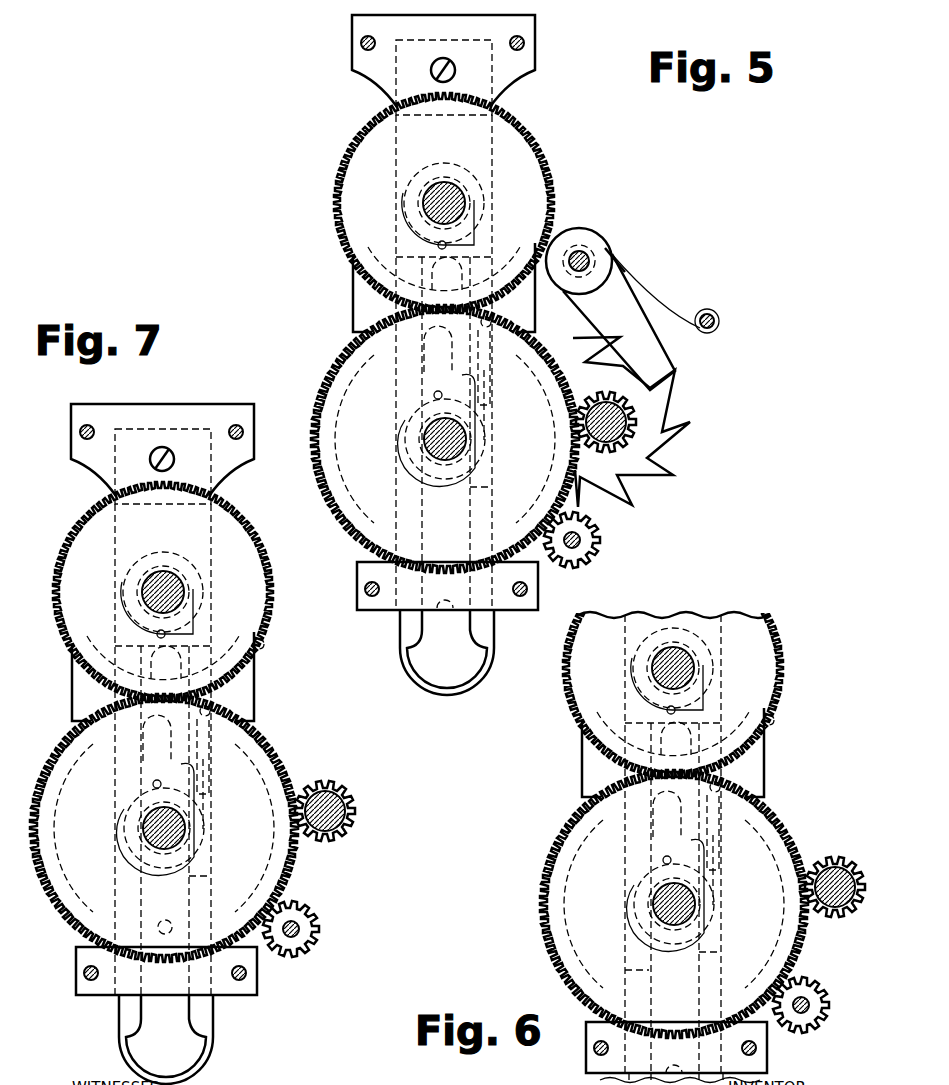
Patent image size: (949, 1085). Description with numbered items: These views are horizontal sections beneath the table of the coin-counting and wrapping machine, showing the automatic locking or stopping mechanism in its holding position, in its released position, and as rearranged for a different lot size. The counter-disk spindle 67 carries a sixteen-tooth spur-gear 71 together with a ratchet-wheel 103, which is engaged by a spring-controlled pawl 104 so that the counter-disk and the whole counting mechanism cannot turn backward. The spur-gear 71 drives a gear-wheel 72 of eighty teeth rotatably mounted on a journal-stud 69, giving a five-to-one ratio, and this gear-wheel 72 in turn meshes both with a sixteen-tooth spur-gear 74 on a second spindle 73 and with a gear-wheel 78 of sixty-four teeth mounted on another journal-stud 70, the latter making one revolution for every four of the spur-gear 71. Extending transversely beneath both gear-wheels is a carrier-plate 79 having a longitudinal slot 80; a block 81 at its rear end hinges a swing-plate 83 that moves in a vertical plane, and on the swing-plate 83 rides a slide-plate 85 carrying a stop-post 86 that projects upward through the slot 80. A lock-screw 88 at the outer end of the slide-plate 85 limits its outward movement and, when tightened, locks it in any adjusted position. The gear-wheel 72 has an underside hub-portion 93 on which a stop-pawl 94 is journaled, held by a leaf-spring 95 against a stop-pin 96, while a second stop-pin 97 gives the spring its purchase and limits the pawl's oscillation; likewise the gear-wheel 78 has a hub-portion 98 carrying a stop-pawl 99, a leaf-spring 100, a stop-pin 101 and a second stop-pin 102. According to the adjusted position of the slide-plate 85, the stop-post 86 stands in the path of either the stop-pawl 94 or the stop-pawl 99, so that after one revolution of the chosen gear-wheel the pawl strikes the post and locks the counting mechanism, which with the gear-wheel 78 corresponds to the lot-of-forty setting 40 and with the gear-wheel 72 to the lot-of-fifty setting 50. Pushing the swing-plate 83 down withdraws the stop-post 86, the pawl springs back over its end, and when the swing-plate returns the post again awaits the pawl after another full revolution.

In FIG. 7, the loop 40 is at (166, 1039).
In FIG. 5, the loop 50 is at (447, 652).
In FIG. 5, the spindle 67 is at (640, 418).
In FIG. 7, the spindle 67 is at (351, 810).
In FIG. 6, the spindle 67 is at (835, 867).
In FIG. 5, the journal-stud 69 is at (445, 450).
In FIG. 7, the journal-stud 69 is at (132, 828).
In FIG. 6, the journal-stud 69 is at (644, 904).
In FIG. 5, the journal-stud 70 is at (444, 190).
In FIG. 7, the journal-stud 70 is at (163, 571).
In FIG. 6, the journal-stud 70 is at (673, 638).
In FIG. 5, the spur-gear 71 is at (627, 424).
In FIG. 7, the spur-gear 71 is at (325, 790).
In FIG. 6, the spur-gear 71 is at (832, 871).
In FIG. 5, the gear-wheel 72 is at (532, 340).
In FIG. 7, the gear-wheel 72 is at (186, 828).
In FIG. 6, the gear-wheel 72 is at (665, 904).
In FIG. 5, the spindle 73 is at (575, 540).
In FIG. 7, the spindle 73 is at (322, 915).
In FIG. 6, the spindle 73 is at (827, 985).
In FIG. 5, the spur-gear 74 is at (600, 550).
In FIG. 7, the spur-gear 74 is at (311, 929).
In FIG. 6, the spur-gear 74 is at (812, 1014).
In FIG. 5, the gear-wheel 78 is at (545, 168).
In FIG. 7, the gear-wheel 78 is at (179, 592).
In FIG. 6, the gear-wheel 78 is at (675, 668).
In FIG. 5, the carrier-plate 79 is at (520, 67).
In FIG. 7, the carrier-plate 79 is at (148, 684).
In FIG. 6, the carrier-plate 79 is at (657, 1047).
In FIG. 5, the longitudinal slot 80 is at (445, 331).
In FIG. 7, the longitudinal slot 80 is at (251, 705).
In FIG. 6, the longitudinal slot 80 is at (676, 760).
In FIG. 5, the block 81 is at (395, 75).
In FIG. 7, the block 81 is at (134, 466).
In FIG. 5, the swing-plate 83 is at (395, 416).
In FIG. 7, the swing-plate 83 is at (143, 852).
In FIG. 6, the swing-plate 83 is at (656, 717).
In FIG. 5, the slide-plate 85 is at (470, 487).
In FIG. 7, the slide-plate 85 is at (170, 923).
In FIG. 6, the slide-plate 85 is at (654, 969).
In FIG. 5, the stop-post 86 is at (415, 360).
In FIG. 7, the stop-post 86 is at (146, 707).
In FIG. 6, the stop-post 86 is at (655, 812).
In FIG. 5, the lock-screw 88 is at (420, 625).
In FIG. 7, the lock-screw 88 is at (167, 910).
In FIG. 6, the lock-screw 88 is at (695, 1056).
In FIG. 5, the hub-portion 93 is at (415, 472).
In FIG. 7, the hub-portion 93 is at (164, 828).
In FIG. 6, the hub-portion 93 is at (674, 904).
In FIG. 5, the stop-pawl 94 is at (482, 360).
In FIG. 7, the stop-pawl 94 is at (162, 756).
In FIG. 6, the stop-pawl 94 is at (707, 828).
In FIG. 5, the leaf-spring 95 is at (490, 395).
In FIG. 7, the leaf-spring 95 is at (237, 794).
In FIG. 6, the leaf-spring 95 is at (742, 870).
In FIG. 5, the stop-pin 96 is at (430, 395).
In FIG. 7, the stop-pin 96 is at (112, 799).
In FIG. 6, the stop-pin 96 is at (629, 854).
In FIG. 5, the second stop-pin 97 is at (495, 365).
In FIG. 7, the second stop-pin 97 is at (217, 799).
In FIG. 6, the second stop-pin 97 is at (701, 886).
In FIG. 5, the hub-portion 98 is at (468, 188).
In FIG. 7, the hub-portion 98 is at (169, 583).
In FIG. 6, the hub-portion 98 is at (693, 669).
In FIG. 5, the stop-pawl 99 is at (430, 268).
In FIG. 7, the stop-pawl 99 is at (203, 632).
In FIG. 6, the stop-pawl 99 is at (713, 717).
In FIG. 5, the leaf-spring 100 is at (492, 222).
In FIG. 7, the leaf-spring 100 is at (179, 643).
In FIG. 6, the leaf-spring 100 is at (713, 734).
In FIG. 5, the stop-pin 101 is at (430, 245).
In FIG. 7, the stop-pin 101 is at (142, 635).
In FIG. 6, the stop-pin 101 is at (635, 699).
In FIG. 5, the second stop-pin 102 is at (556, 225).
In FIG. 7, the second stop-pin 102 is at (287, 649).
In FIG. 6, the second stop-pin 102 is at (802, 708).
In FIG. 5, the ratchet-wheel 103 is at (714, 436).
In FIG. 5, the spring-controlled pawl 104 is at (625, 302).